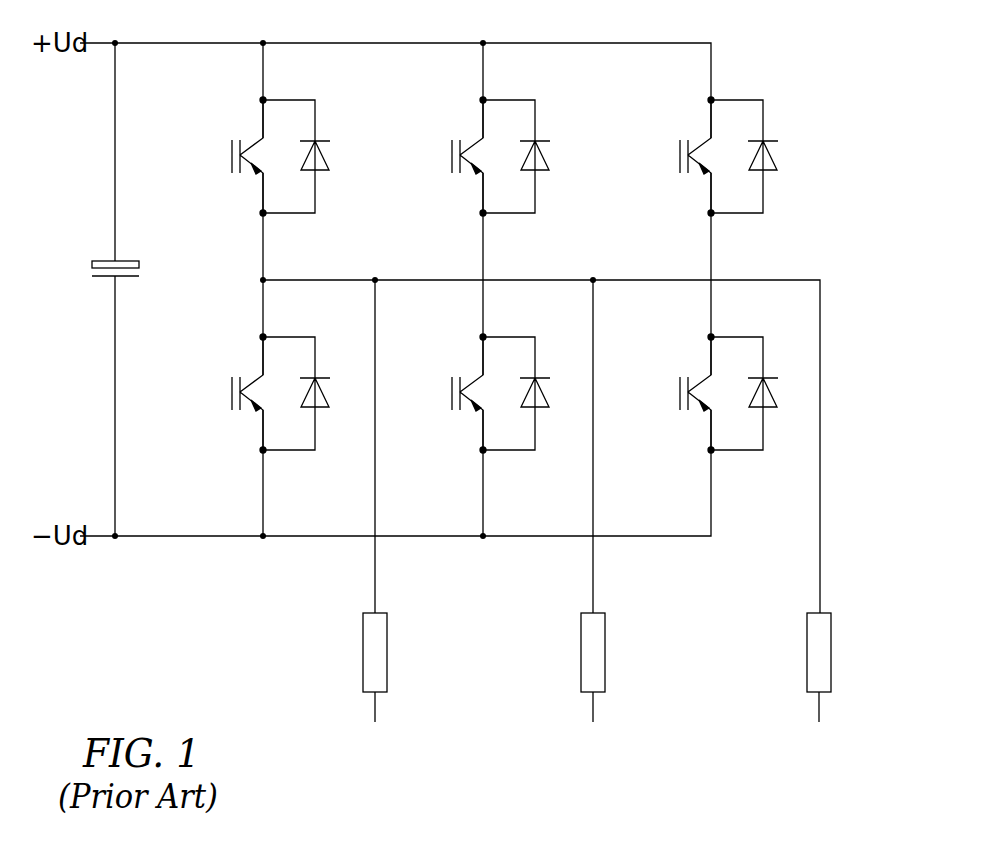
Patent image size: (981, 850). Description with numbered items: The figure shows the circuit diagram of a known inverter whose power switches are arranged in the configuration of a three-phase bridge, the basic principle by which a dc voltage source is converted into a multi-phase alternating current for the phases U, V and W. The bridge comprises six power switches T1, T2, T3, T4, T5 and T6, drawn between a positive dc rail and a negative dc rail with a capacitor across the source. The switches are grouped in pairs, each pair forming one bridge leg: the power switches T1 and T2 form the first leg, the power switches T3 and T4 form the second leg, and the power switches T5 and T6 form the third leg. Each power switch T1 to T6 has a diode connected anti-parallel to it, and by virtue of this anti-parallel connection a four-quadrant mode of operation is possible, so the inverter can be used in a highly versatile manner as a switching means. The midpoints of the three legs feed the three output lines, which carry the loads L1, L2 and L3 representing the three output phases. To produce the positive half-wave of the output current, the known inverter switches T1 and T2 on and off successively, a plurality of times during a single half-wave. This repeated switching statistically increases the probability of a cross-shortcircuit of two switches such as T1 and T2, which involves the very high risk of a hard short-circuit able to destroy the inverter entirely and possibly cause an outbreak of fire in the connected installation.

The power switch T1 is at (256, 156).
The power switch T2 is at (256, 393).
The power switch T3 is at (477, 156).
The power switch T4 is at (477, 393).
The power switch T5 is at (704, 156).
The power switch T6 is at (704, 393).
The load / output phase inductance L1 is at (380, 525).
The load / output phase inductance L2 is at (598, 525).
The load / output phase inductance L3 is at (824, 692).